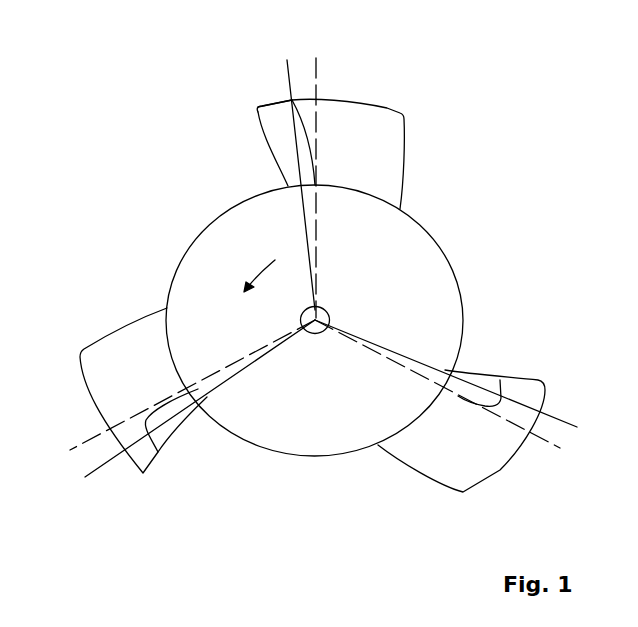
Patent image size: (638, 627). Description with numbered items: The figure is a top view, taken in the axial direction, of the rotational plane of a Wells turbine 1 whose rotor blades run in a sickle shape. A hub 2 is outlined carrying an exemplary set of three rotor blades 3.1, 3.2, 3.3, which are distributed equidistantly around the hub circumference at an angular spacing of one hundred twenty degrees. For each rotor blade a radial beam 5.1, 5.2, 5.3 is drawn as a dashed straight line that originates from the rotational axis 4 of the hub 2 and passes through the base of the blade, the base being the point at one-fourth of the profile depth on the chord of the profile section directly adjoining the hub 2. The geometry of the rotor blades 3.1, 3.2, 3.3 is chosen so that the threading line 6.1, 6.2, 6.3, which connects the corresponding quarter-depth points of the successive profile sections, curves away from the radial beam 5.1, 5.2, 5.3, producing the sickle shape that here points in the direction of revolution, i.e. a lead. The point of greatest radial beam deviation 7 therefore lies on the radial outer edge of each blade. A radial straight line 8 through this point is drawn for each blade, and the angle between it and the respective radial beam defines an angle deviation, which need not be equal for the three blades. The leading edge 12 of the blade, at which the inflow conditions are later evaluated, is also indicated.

The Wells turbine 1 is at (511, 79).
The hub 2 is at (423, 247).
The rotor blade 3.1 is at (397, 153).
The rotor blade 3.2 is at (118, 340).
The rotor blade 3.3 is at (435, 467).
The rotational axis 4 is at (326, 313).
The radial beam 5.1 is at (320, 68).
The radial beam 5.2 is at (78, 447).
The radial beam 5.3 is at (550, 447).
The threading line 6.1 is at (297, 125).
The threading line 6.2 is at (155, 445).
The threading line 6.3 is at (502, 386).
The point of greatest radial beam deviation 7 is at (289, 100).
The radial straight line 8 is at (283, 68).
The leading edge 12 is at (287, 160).